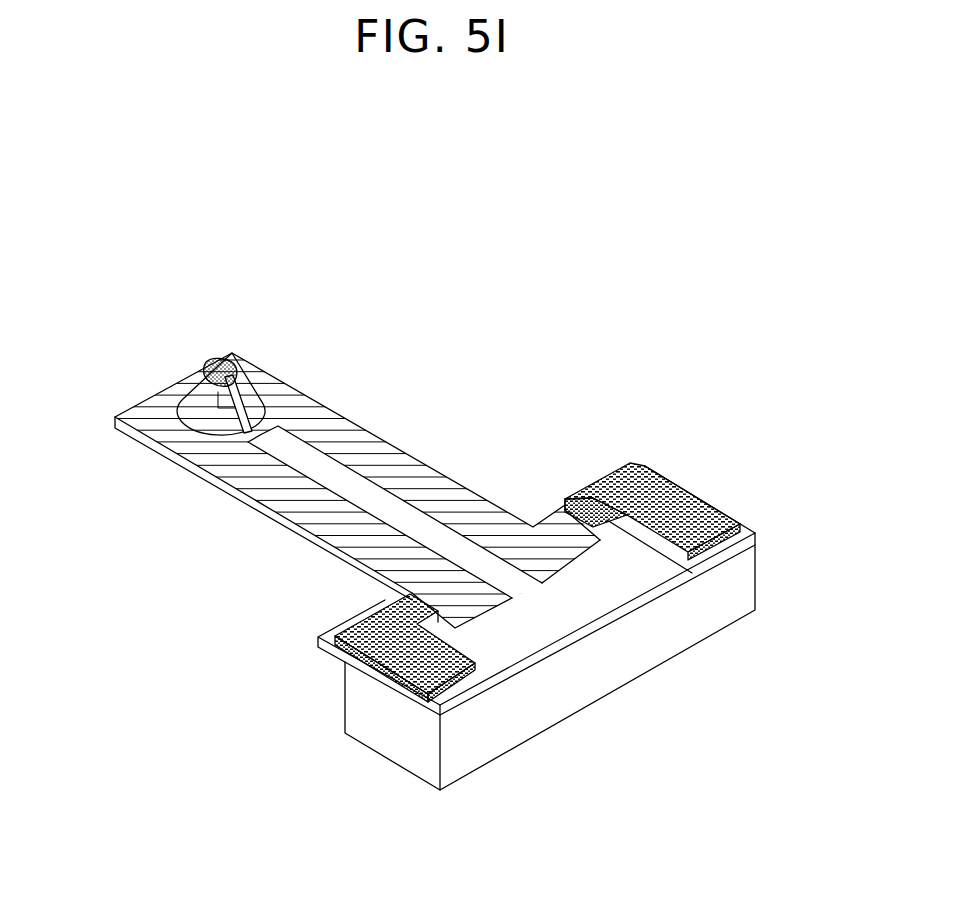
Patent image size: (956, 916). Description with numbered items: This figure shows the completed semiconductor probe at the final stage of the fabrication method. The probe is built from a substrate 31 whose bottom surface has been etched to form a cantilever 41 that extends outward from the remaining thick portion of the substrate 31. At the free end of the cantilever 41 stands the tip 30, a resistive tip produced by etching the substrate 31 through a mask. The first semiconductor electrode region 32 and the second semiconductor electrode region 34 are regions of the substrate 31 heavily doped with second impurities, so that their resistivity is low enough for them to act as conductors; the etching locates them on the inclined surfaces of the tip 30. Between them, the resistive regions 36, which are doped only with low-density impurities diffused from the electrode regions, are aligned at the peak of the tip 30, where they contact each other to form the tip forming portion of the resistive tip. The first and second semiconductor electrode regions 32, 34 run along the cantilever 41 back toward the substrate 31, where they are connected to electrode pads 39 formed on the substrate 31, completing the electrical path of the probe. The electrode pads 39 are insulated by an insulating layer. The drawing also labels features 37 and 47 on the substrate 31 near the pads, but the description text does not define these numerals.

The tip 30 is at (260, 378).
The substrate 31 is at (735, 601).
The first semiconductor electrode region 32 is at (300, 407).
The second semiconductor electrode region 34 is at (158, 413).
The resistive region 36 is at (232, 353).
The lower layer 37 is at (458, 693).
The electrode pad 39 is at (683, 490).
The cantilever 41 is at (172, 452).
The upper layer 47 is at (742, 534).